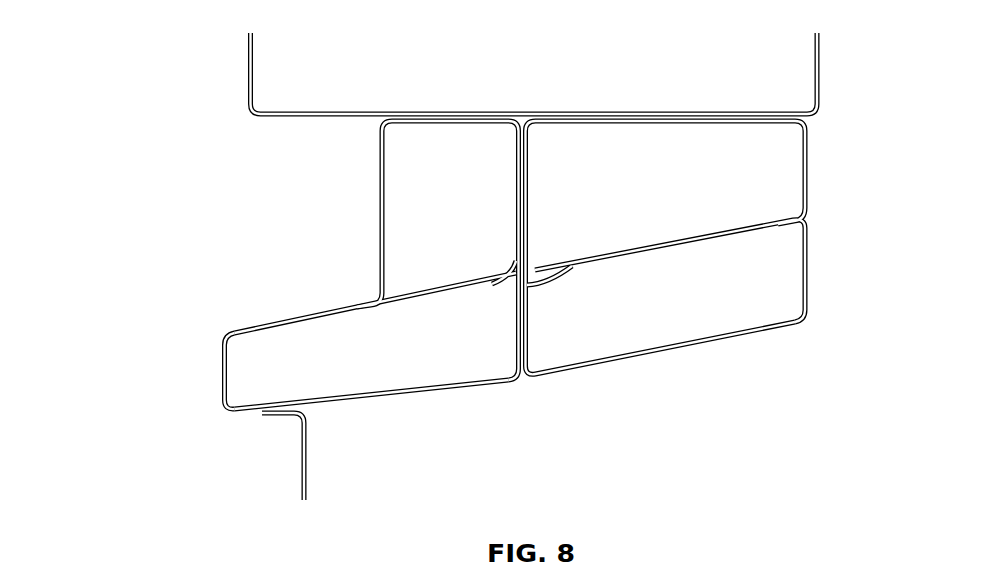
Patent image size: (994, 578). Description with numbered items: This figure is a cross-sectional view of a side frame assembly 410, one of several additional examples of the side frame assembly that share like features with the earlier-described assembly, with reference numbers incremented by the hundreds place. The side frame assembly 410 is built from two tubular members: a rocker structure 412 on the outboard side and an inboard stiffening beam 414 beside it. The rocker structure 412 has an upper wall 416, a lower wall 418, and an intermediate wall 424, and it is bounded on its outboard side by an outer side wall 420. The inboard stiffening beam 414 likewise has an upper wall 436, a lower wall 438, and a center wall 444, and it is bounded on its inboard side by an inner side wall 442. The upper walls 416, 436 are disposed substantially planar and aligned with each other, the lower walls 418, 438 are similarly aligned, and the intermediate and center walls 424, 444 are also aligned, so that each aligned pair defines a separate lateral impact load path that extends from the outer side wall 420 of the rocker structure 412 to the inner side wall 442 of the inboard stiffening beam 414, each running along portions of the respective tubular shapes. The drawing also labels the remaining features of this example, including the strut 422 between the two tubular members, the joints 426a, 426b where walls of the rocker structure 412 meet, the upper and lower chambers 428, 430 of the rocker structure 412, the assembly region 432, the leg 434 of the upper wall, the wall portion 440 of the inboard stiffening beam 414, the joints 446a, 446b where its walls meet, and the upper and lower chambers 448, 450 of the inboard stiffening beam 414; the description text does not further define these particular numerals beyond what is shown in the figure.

The side frame assembly 410 is at (163, 60).
The rocker structure 412 is at (441, 406).
The inboard stiffening beam 414 is at (685, 367).
The upper wall 416 is at (506, 73).
The lower wall 418 is at (322, 407).
The outer side wall 420 is at (222, 377).
The central strut 422 is at (517, 207).
The intermediate wall 424 is at (258, 327).
The first joint 426a is at (358, 298).
The second joint 426b is at (498, 272).
The upper chamber 428 is at (398, 214).
The lower chamber 430 is at (331, 364).
The cell assembly 432 is at (268, 207).
The first leg 434 is at (317, 110).
The upper wall 436 is at (662, 112).
The lower wall 438 is at (764, 337).
The inner wall 440 is at (528, 325).
The inner side wall 442 is at (807, 278).
The center wall 444 is at (610, 252).
The first joint 446a is at (526, 283).
The second joint 446b is at (782, 227).
The upper chamber 448 is at (706, 182).
The lower chamber 450 is at (709, 319).